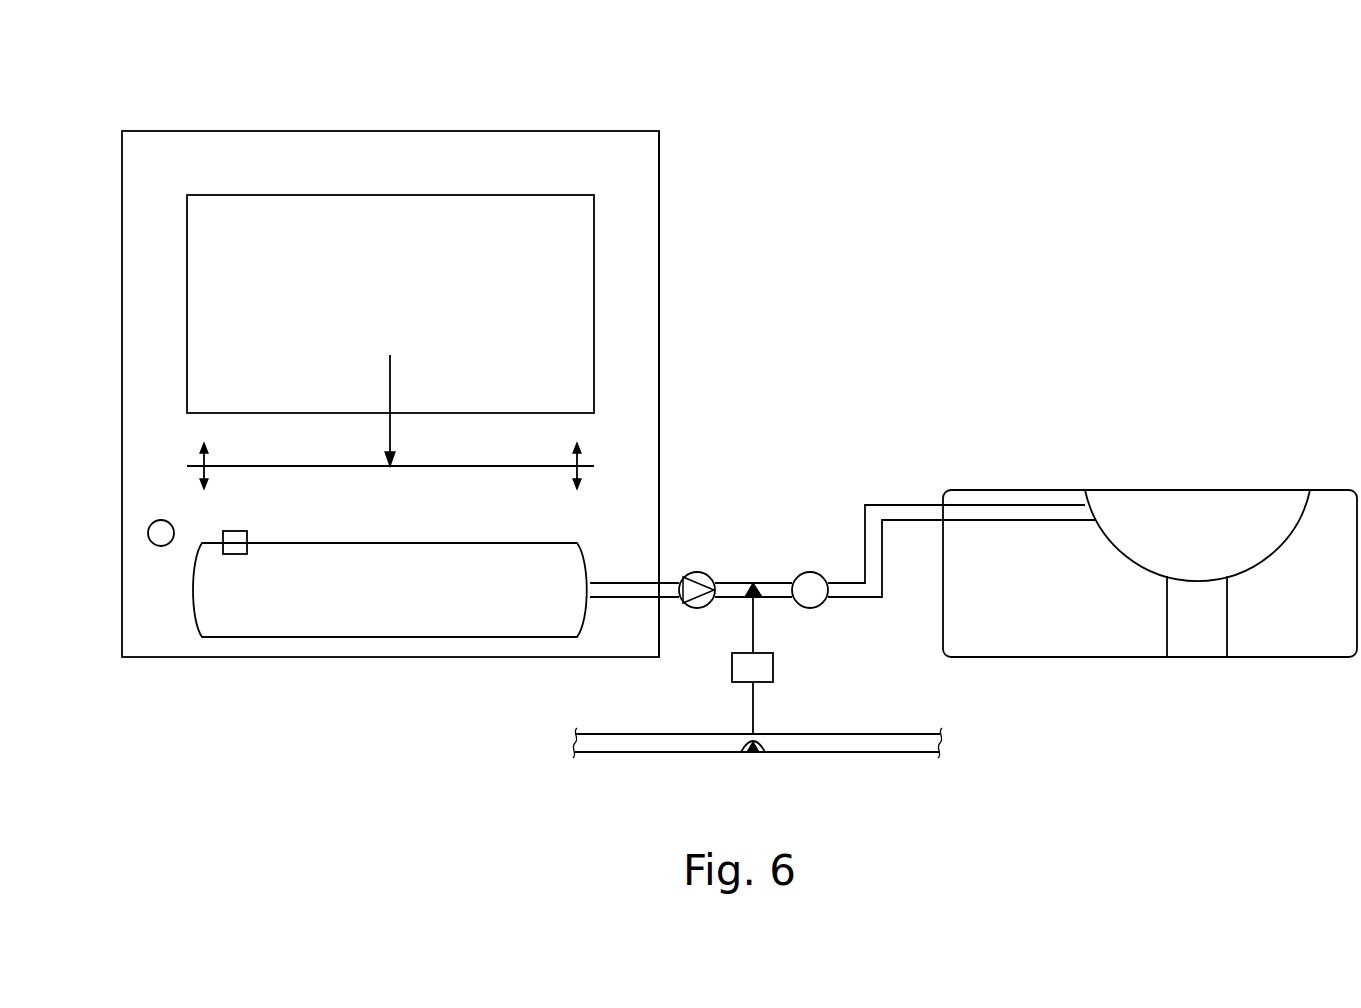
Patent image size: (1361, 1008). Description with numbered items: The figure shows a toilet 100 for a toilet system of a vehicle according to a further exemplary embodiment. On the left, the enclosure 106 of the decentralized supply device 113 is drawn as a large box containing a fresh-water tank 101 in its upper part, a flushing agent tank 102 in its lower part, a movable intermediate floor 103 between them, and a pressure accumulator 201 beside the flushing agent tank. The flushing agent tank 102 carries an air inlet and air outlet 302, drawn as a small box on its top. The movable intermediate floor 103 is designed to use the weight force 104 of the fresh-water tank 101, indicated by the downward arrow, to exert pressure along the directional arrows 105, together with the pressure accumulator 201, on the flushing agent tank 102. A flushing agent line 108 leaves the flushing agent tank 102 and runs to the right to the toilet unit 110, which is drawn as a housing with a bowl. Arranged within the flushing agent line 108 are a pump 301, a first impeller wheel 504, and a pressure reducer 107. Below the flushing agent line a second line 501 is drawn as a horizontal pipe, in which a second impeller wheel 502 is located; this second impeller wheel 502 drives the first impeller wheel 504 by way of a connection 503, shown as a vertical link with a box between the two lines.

The toilet 100 is at (770, 375).
The fresh-water tank 101 is at (275, 218).
The flushing agent tank 102 is at (432, 620).
The movable intermediate floor 103 is at (280, 463).
The weight force 104 is at (393, 390).
The directional arrows 105 is at (197, 458).
The enclosure 106 is at (660, 220).
The pressure reducer 107 is at (812, 570).
The flushing agent line 108 is at (905, 500).
The toilet unit 110 is at (1195, 487).
The decentralized supply device 113 is at (596, 123).
The pressure accumulator 201 is at (147, 533).
The pump 301 is at (703, 570).
The air inlet and air outlet 302 is at (250, 540).
The second line 501 is at (665, 752).
The second impeller wheel 502 is at (766, 752).
The connection 503 is at (775, 668).
The first impeller wheel 504 is at (750, 580).